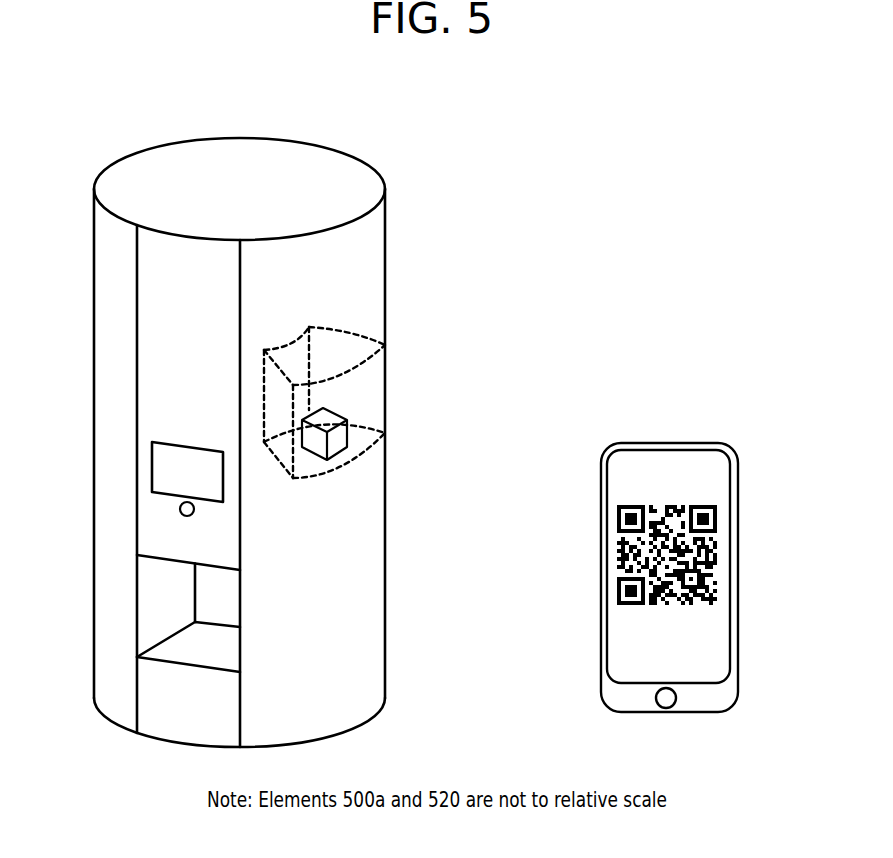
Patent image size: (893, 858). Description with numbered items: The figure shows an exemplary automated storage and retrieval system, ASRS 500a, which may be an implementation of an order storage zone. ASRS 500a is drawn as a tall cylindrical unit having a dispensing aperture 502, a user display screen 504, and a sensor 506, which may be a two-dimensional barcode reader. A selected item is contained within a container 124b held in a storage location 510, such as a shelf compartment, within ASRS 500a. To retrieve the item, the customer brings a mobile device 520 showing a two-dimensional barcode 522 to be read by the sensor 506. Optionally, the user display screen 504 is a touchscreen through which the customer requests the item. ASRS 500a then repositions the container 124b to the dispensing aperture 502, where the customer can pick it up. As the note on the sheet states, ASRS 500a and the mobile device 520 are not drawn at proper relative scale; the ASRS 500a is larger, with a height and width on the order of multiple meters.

The automated storage and retrieval system 500a is at (188, 100).
The dispensing aperture 502 is at (146, 579).
The user display screen 504 is at (152, 446).
The sensor 506 is at (181, 513).
The storage location 510 is at (351, 347).
The container 124b is at (349, 418).
The mobile device 520 is at (695, 443).
The 2D barcode 522 is at (617, 519).